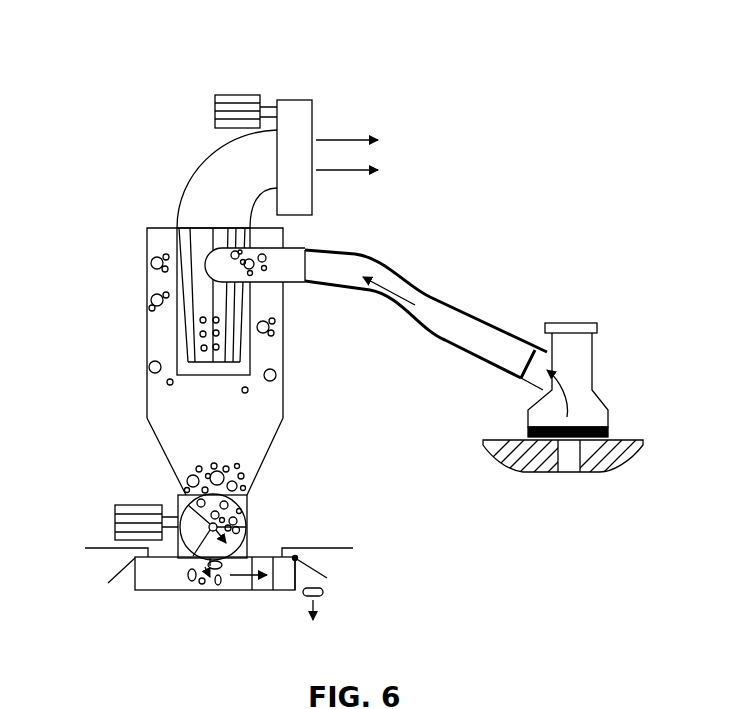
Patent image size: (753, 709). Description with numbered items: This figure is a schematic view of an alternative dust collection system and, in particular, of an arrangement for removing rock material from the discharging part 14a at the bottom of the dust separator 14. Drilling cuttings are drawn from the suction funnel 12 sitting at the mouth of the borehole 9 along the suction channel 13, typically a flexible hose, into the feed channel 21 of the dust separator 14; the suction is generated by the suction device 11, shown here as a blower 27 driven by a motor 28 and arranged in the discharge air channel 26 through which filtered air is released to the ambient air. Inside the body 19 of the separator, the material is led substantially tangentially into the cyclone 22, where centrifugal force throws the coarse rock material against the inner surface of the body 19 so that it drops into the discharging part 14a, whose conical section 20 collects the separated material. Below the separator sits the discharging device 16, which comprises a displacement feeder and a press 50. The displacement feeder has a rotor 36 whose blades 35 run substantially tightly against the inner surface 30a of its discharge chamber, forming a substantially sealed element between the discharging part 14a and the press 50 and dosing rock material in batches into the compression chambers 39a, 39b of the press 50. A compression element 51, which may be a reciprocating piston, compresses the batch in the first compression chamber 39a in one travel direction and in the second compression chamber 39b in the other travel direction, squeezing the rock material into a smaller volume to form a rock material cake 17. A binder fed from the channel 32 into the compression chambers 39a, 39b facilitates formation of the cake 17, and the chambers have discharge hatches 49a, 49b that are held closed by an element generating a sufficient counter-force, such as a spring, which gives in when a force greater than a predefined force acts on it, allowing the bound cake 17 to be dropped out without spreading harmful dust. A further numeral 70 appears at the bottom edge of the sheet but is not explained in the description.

The borehole 9 is at (570, 462).
The suction device 11 is at (293, 72).
The suction funnel 12 is at (575, 367).
The suction channel 13 is at (442, 318).
The dust separator 14 is at (105, 350).
The discharging part 14a is at (286, 455).
The discharging device 16 is at (302, 490).
The cake 17 is at (327, 590).
The body 19 is at (147, 401).
The conical section 20 is at (160, 453).
The feed channel 21 is at (357, 255).
The cyclone 22 is at (263, 355).
The discharge air channel 26 is at (243, 165).
The blower 27 is at (292, 122).
The motor 28 is at (232, 96).
The inner surface of the discharge chamber 30a is at (251, 515).
The channel 32 is at (100, 547).
The blades 35 is at (236, 517).
The rotor 36 is at (187, 518).
The first compression chamber 39a is at (153, 580).
The second compression chamber 39b is at (277, 593).
The discharge hatch 49a is at (130, 568).
The discharge hatch 49b is at (318, 568).
The press 50 is at (212, 597).
The compression element 51 is at (267, 580).
The reference 70 is at (456, 705).